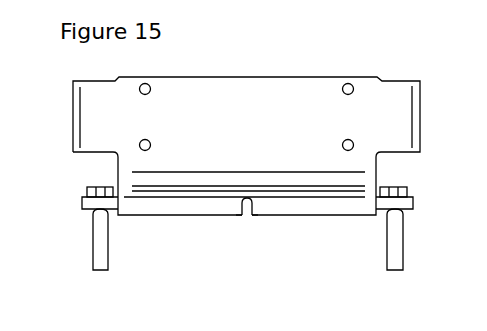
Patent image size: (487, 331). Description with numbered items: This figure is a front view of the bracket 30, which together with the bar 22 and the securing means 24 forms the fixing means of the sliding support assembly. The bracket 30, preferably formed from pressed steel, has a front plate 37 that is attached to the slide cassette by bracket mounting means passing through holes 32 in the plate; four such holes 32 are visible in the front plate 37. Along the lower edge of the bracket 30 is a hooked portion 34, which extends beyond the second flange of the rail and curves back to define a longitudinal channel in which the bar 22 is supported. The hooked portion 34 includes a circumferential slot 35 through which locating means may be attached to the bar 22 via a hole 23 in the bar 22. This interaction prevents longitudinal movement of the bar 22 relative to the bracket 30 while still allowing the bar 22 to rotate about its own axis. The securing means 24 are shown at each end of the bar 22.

The bar 22 is at (82, 205).
The hole 23 is at (247, 213).
The securing means 24 is at (99, 257).
The bracket 30 is at (293, 77).
The holes 32 is at (350, 87).
The hooked portion 34 is at (331, 215).
The circumferential slot 35 is at (236, 210).
The front plate 37 is at (228, 97).